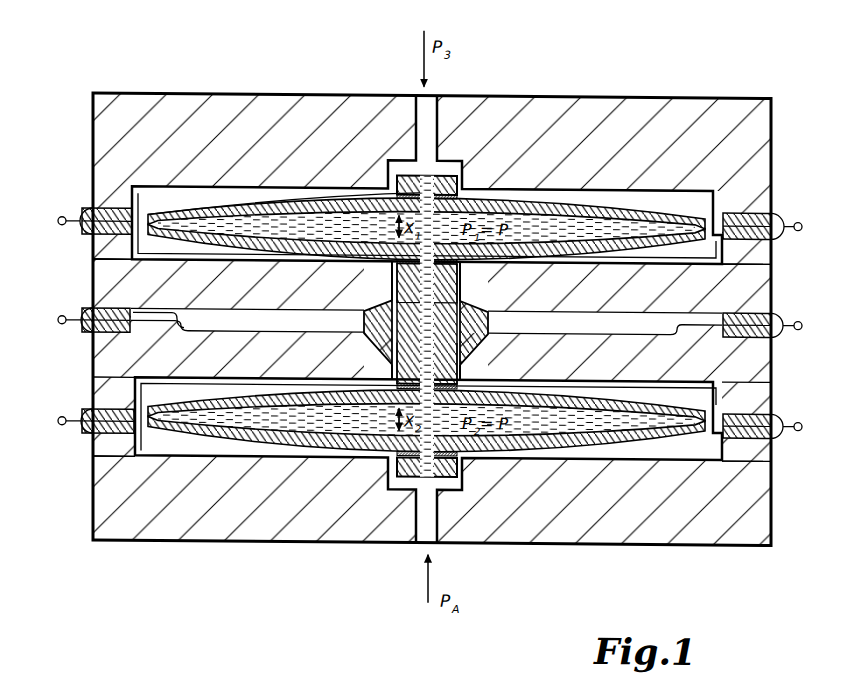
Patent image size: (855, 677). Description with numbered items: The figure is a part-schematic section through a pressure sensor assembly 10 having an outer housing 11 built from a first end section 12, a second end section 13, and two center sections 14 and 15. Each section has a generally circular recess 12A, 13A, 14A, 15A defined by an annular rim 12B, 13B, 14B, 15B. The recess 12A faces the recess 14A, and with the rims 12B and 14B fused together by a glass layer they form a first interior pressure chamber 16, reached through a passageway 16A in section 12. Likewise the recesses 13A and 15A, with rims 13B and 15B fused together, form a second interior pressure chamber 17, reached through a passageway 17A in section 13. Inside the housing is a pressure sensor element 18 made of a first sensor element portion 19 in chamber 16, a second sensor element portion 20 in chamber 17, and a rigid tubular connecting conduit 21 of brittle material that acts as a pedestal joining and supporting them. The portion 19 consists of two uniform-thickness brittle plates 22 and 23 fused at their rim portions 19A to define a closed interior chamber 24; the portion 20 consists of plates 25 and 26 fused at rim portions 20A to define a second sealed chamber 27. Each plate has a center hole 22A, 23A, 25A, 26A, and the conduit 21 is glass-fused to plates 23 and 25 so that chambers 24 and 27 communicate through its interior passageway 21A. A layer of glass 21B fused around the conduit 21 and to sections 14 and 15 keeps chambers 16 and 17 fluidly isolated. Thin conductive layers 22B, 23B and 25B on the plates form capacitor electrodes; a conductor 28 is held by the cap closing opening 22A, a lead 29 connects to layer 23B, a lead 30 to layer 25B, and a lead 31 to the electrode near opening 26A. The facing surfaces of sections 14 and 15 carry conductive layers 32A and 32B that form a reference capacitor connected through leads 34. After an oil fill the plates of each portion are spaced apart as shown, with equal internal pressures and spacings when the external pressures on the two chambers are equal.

The pressure sensor assembly 10 is at (606, 563).
The outer housing 11 is at (498, 549).
The first end section 12 is at (566, 98).
The recess 12A is at (158, 183).
The annular rim 12B is at (775, 188).
The second end section 13 is at (262, 545).
The recess 13A is at (97, 489).
The annular rim 13B is at (760, 507).
The center section 14 is at (750, 293).
The recess 14A is at (97, 279).
The annular rim 14B is at (774, 259).
The center section 15 is at (745, 381).
The recess 15A is at (93, 379).
The annular rim 15B is at (760, 401).
The first interior pressure chamber 16 is at (196, 184).
The passageway 16A is at (432, 104).
The second interior pressure chamber 17 is at (168, 461).
The passageway 17A is at (408, 546).
The pressure sensor element 18 is at (290, 323).
The first sensor element portion 19 is at (426, 204).
The rim portions 19A is at (724, 185).
The second sensor element portion 20 is at (426, 444).
The rim portions 20A is at (697, 459).
The connecting conduit 21 is at (488, 321).
The interior passageway 21A is at (460, 351).
The layer of glass 21B is at (394, 270).
The plate 22 is at (585, 197).
The center hole 22A is at (432, 206).
The layer of electrically conductive material 22B is at (305, 188).
The plate 23 is at (648, 244).
The center hole 23A is at (470, 259).
The layer of electrically conductive material 23B is at (262, 254).
The closed interior chamber 24 is at (500, 213).
The plate 25 is at (625, 411).
The center hole 25A is at (400, 381).
The layer of electrically conductive material 25B is at (300, 383).
The plate 26 is at (222, 433).
The center hole 26A is at (462, 463).
The second sealed chamber 27 is at (296, 441).
The conductor 28 is at (680, 186).
The lead 29 is at (70, 226).
The third lead 30 is at (72, 434).
The fourth lead 31 is at (796, 434).
The layer of conductive material 32A is at (690, 318).
The layer of conductive material 32B is at (584, 321).
The leads 34 is at (78, 326).